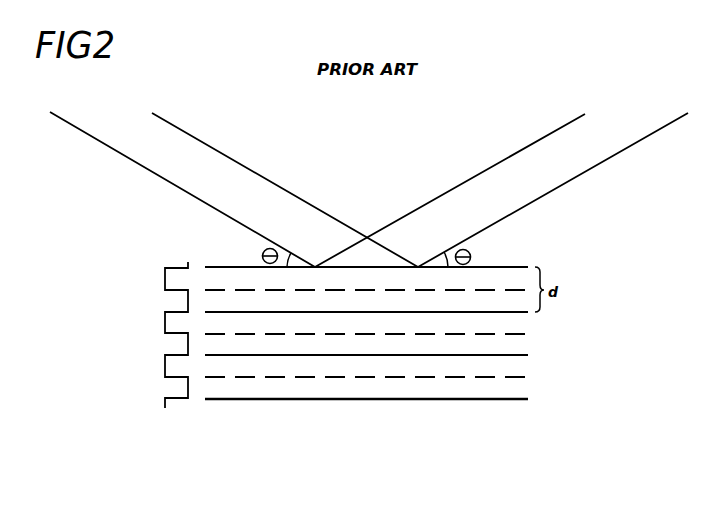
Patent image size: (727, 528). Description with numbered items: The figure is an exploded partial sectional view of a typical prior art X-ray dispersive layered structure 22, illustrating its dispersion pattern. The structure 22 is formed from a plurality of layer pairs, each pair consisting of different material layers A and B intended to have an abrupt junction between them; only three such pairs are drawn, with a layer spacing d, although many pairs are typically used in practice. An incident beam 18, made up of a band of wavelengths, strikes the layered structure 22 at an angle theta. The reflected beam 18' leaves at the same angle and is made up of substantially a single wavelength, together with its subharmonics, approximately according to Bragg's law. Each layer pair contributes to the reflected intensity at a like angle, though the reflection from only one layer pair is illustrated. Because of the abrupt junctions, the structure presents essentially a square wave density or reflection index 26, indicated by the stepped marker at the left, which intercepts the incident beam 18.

The incident beam 18 is at (234, 182).
The reflected beam 18' is at (501, 182).
The layered structure 22 is at (418, 396).
The square wave density or reflection index 26 is at (165, 318).